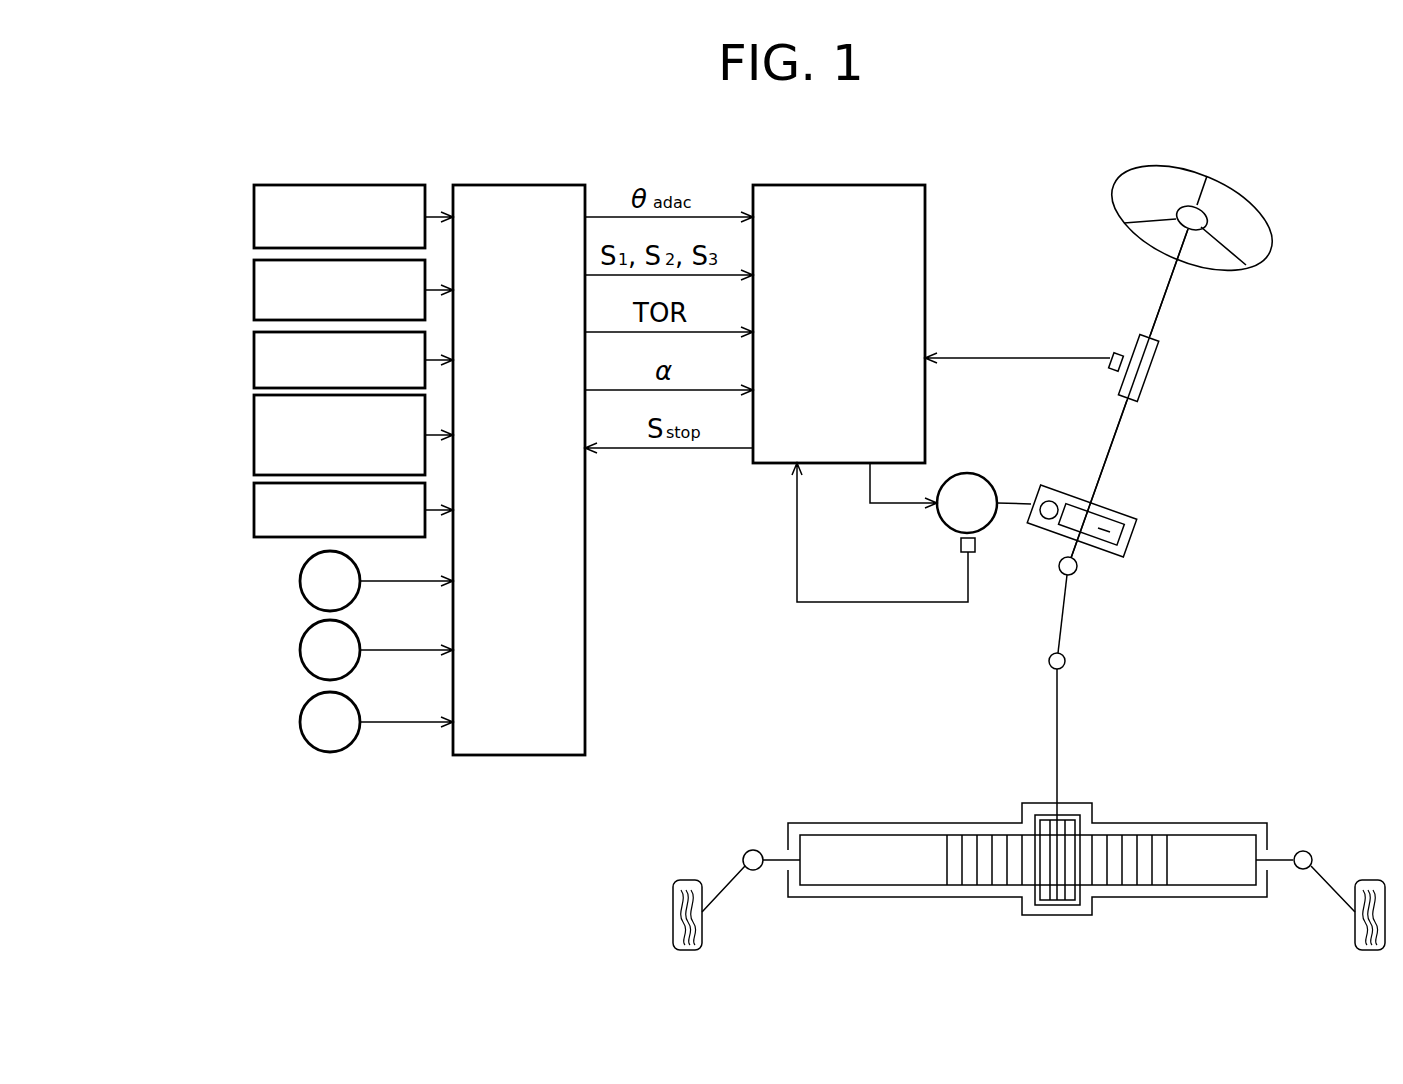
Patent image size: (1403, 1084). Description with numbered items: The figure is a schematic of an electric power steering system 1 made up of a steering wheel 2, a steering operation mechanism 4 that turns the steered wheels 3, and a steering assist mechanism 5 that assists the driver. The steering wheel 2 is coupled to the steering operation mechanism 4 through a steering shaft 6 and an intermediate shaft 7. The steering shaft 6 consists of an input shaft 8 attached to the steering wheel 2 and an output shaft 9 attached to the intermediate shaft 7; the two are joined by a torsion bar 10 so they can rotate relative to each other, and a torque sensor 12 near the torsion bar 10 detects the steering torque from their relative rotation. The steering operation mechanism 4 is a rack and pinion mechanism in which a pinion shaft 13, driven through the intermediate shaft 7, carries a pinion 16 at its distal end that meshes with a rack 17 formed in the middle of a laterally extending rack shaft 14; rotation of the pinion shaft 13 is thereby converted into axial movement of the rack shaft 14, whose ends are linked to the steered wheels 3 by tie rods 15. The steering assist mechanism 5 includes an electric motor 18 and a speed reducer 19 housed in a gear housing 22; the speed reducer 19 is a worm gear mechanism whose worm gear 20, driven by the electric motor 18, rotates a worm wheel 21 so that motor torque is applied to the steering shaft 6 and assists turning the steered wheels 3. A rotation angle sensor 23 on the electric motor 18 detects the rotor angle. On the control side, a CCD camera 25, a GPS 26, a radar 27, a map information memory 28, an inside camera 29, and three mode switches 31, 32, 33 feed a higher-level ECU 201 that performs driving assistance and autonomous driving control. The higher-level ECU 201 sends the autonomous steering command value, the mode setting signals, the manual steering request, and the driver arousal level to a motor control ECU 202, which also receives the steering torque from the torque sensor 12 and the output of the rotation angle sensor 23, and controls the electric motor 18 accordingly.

The electric power steering system 1 is at (1034, 152).
The steering wheel 2 is at (1240, 192).
The steered wheels 3 is at (688, 880).
The steering operation mechanism 4 is at (1114, 821).
The steering assist mechanism 5 is at (1077, 428).
The steering shaft 6 is at (1181, 283).
The intermediate shaft 7 is at (1063, 630).
The input shaft 8 is at (1160, 320).
The output shaft 9 is at (1120, 432).
The torsion bar 10 is at (1152, 378).
The torque sensor 12 is at (1110, 355).
The pinion shaft 13 is at (1060, 722).
The rack shaft 14 is at (1210, 897).
The tie rods 15 is at (732, 885).
The pinion 16 is at (1057, 898).
The rack 17 is at (970, 878).
The electric motor 18 is at (967, 473).
The speed reducer 19 is at (1057, 486).
The worm gear 20 is at (1036, 525).
The worm wheel 21 is at (1118, 535).
The gear housing 22 is at (1102, 556).
The rotation angle sensor 23 is at (960, 545).
The CCD camera 25 is at (254, 217).
The GPS 26 is at (254, 290).
The radar 27 is at (254, 360).
The map information memory 28 is at (254, 435).
The inside camera 29 is at (254, 509).
The mode switch 31 is at (300, 581).
The mode switch 32 is at (300, 650).
The mode switch 33 is at (300, 722).
The higher-level ECU 201 is at (521, 185).
The motor control ECU 202 is at (856, 185).